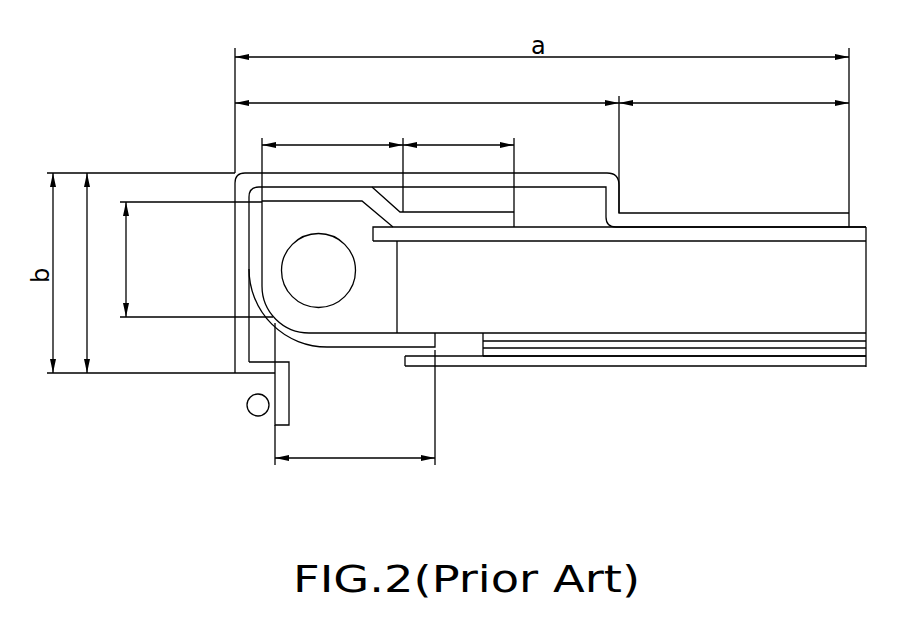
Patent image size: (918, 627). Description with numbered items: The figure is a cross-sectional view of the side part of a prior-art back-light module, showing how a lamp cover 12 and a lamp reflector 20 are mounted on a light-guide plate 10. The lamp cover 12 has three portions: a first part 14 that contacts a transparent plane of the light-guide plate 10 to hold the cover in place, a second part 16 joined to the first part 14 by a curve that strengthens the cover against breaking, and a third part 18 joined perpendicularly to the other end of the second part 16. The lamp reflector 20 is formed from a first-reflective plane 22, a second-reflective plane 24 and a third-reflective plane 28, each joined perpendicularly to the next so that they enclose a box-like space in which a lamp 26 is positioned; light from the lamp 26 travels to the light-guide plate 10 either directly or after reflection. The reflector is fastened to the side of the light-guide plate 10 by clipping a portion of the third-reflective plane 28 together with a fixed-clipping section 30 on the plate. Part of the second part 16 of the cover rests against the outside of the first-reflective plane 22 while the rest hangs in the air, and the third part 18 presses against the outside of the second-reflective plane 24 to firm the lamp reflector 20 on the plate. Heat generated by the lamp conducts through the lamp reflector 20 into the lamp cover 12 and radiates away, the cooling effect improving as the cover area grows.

The light-guide plate 10 is at (871, 228).
The lamp cover 12 is at (248, 300).
The first part 14 is at (734, 91).
The second part 16 is at (427, 144).
The third part 18 is at (75, 273).
The lamp reflector 20 is at (253, 267).
The first-reflective plane 22 is at (332, 165).
The second-reflective plane 24 is at (185, 259).
The lamp 26 is at (338, 283).
The third-reflective plane 28 is at (355, 407).
The fixed-clipping section 30 is at (458, 172).